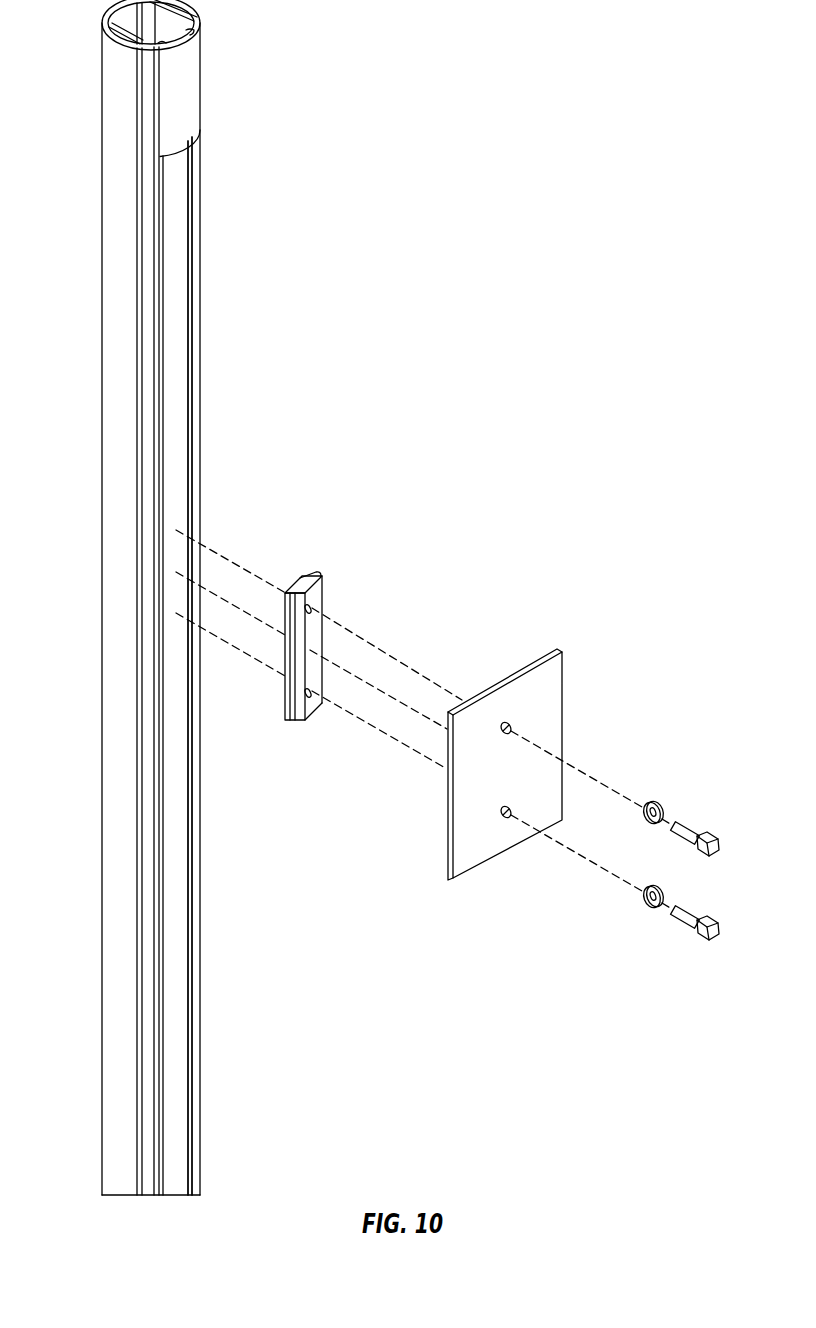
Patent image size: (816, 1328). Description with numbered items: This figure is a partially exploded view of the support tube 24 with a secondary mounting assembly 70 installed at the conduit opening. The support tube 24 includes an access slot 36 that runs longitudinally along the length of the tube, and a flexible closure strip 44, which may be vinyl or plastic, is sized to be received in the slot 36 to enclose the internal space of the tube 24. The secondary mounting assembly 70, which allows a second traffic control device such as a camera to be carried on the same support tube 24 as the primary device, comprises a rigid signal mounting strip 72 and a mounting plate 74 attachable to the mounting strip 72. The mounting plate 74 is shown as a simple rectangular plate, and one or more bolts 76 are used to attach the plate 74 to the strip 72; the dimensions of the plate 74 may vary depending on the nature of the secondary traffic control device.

The support tube 24 is at (98, 666).
The flexible closure strip 44 is at (187, 90).
The access slot 36 is at (195, 218).
The signal mounting strip 72 is at (318, 594).
The secondary mounting assembly 70 is at (516, 640).
The mounting plate 74 is at (545, 690).
The bolts 76 is at (692, 823).